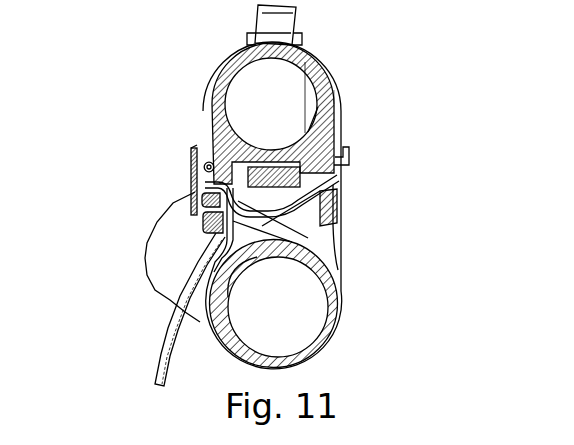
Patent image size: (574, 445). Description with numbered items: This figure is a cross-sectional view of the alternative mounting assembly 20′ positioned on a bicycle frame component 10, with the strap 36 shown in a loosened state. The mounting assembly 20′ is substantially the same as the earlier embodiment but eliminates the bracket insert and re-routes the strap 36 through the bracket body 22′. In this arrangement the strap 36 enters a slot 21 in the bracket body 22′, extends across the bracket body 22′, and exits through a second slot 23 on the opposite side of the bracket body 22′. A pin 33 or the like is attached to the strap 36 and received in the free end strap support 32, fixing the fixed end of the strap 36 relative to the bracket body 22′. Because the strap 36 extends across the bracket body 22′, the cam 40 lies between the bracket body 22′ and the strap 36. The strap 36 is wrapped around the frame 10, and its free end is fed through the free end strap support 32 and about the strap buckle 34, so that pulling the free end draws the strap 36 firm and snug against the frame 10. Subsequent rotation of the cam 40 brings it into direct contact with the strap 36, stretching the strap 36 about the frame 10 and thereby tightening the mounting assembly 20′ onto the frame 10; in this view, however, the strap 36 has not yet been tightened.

The mounting assembly 20′ is at (319, 57).
The bracket body 22′ is at (336, 85).
The cam 40 is at (325, 120).
The slot 21 is at (336, 177).
The second slot 23 is at (205, 183).
The free end strap support 32 is at (189, 160).
The pin 33 is at (216, 186).
The strap buckle 34 is at (198, 188).
The strap 36 is at (341, 260).
The bicycle frame component 10 is at (150, 296).